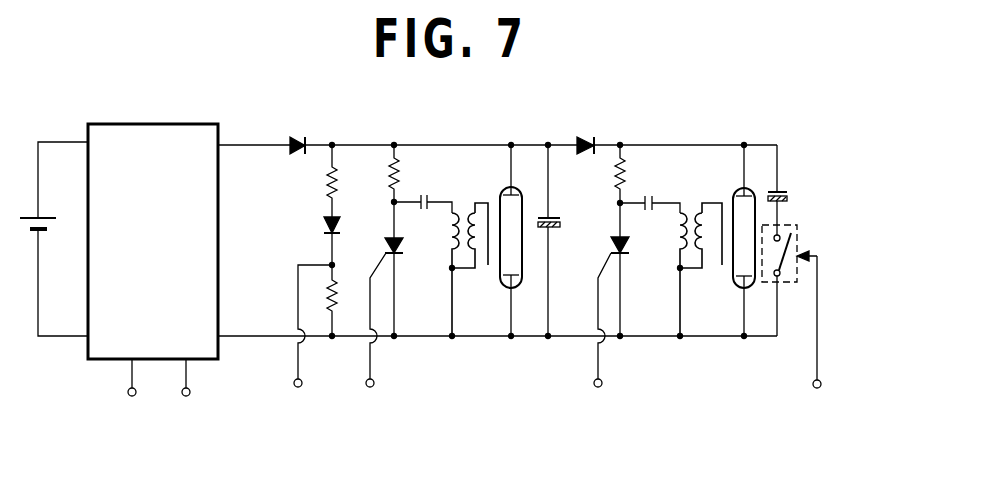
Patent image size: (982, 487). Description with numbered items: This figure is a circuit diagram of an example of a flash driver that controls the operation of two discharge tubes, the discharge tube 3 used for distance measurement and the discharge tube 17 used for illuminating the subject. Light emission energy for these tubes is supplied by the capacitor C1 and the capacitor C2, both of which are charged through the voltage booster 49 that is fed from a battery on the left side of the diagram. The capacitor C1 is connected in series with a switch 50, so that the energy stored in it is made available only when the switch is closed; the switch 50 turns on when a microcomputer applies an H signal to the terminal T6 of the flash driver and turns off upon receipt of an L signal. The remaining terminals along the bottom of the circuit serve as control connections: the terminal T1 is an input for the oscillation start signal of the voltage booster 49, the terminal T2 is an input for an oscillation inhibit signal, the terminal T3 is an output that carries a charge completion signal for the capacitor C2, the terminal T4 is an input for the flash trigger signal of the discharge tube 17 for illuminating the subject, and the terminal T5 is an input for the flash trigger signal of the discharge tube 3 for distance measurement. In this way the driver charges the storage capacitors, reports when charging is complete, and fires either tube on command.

The voltage booster 49 is at (157, 124).
The discharge tube 3 is at (518, 263).
The discharge tube 17 is at (732, 265).
The switch 50 is at (797, 225).
The capacitor C1 is at (783, 188).
The capacitor C2 is at (555, 216).
The terminal T1 is at (132, 390).
The terminal T2 is at (186, 390).
The terminal T3 is at (310, 339).
The terminal T4 is at (599, 333).
The terminal T5 is at (373, 333).
The terminal T6 is at (812, 332).